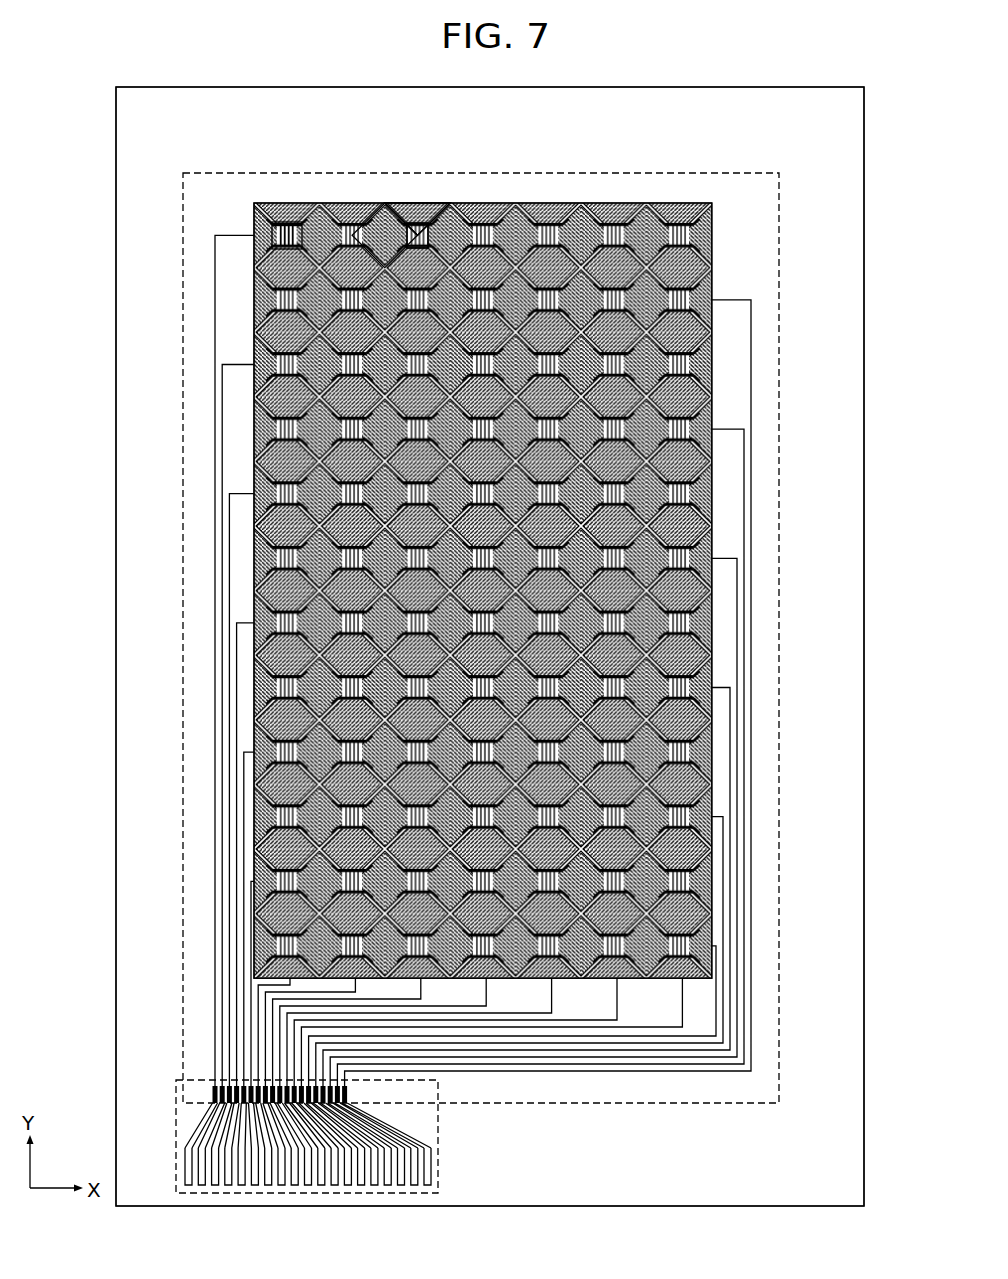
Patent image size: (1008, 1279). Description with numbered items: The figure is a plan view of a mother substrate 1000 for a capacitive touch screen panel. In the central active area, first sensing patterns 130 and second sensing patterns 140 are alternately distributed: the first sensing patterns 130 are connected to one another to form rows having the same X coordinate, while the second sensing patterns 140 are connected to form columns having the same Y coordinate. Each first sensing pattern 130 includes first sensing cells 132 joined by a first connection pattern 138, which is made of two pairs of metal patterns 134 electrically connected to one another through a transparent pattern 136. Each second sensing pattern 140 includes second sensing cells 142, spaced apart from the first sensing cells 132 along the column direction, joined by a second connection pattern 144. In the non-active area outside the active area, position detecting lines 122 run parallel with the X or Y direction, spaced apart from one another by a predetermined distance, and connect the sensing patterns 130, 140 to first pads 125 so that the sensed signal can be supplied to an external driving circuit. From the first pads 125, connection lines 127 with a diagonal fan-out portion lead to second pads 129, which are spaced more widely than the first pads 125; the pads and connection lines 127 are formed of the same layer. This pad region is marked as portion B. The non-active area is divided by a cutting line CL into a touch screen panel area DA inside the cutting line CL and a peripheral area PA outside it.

The mother substrate 1000 is at (493, 70).
The position detecting lines 122 is at (205, 271).
The first pads 125 is at (342, 1086).
The connection line 127 is at (383, 1122).
The second pads 129 is at (425, 1158).
The first sensing patterns 130 is at (435, 113).
The first sensing cells 132 is at (372, 205).
The metal patterns 134 is at (400, 210).
The transparent pattern 136 is at (416, 212).
The first connection pattern 138 is at (455, 142).
The second sensing patterns 140 is at (330, 142).
The second sensing cells 142 is at (286, 216).
The second connection pattern 144 is at (276, 212).
The cutting line CL is at (771, 251).
The touch screen panel area DA is at (757, 663).
The peripheral area PA is at (848, 718).
The portion B is at (168, 1085).